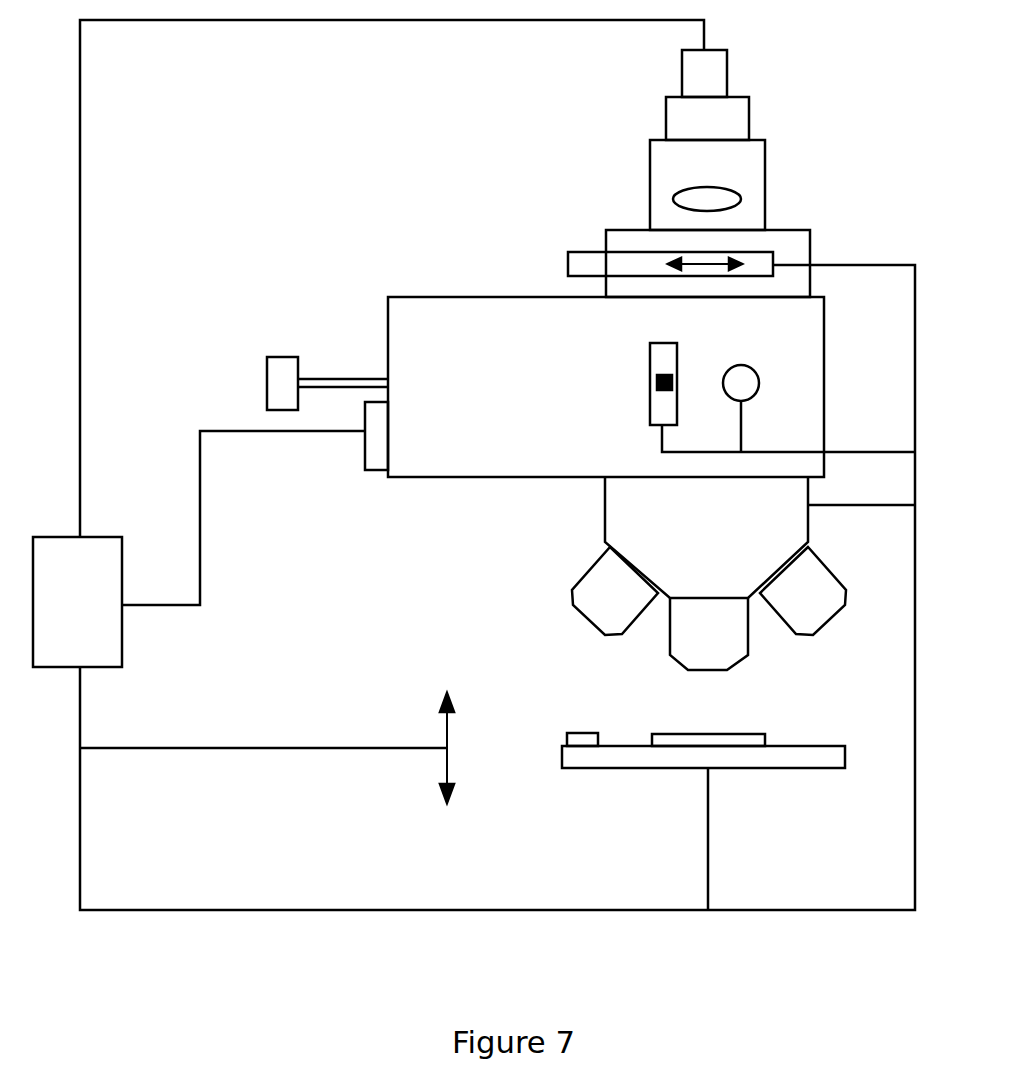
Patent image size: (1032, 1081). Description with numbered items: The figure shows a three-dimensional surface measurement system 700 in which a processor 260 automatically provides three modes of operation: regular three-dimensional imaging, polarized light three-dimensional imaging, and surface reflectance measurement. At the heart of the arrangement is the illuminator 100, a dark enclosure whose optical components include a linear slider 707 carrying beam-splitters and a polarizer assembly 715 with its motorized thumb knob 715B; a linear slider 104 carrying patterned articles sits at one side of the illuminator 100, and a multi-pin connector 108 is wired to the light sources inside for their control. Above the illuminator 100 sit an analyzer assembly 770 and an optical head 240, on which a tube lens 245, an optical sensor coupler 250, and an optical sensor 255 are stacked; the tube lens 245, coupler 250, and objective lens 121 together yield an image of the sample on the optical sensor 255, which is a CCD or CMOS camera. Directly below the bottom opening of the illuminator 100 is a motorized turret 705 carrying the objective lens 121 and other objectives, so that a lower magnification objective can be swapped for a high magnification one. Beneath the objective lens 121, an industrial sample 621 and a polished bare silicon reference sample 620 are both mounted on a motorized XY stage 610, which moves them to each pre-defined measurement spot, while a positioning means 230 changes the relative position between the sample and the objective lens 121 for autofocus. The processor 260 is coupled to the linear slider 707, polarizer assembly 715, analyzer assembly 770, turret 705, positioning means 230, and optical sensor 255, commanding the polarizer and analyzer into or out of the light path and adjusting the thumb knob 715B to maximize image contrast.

The 3D surface measurement system 700 is at (282, 139).
The optical sensor 255 is at (734, 70).
The optical sensor coupler 250 is at (740, 118).
The tube lens 245 is at (736, 185).
The optical head 240 is at (737, 258).
The analyzer assembly 770 is at (641, 258).
The illuminator 100 is at (507, 362).
The linear slider 104 is at (321, 366).
The multi-pin connector 108 is at (347, 440).
The polarizer assembly 715 is at (712, 389).
The motorized thumb knob 715B is at (657, 383).
The linear slider 707 is at (741, 391).
The turret 705 is at (706, 537).
The objective lens 121 is at (709, 610).
The processor 260 is at (77, 602).
The positioning means 230 is at (267, 753).
The motorized XY stage 610 is at (703, 828).
The reference sample 620 is at (581, 722).
The industrial sample 621 is at (742, 728).